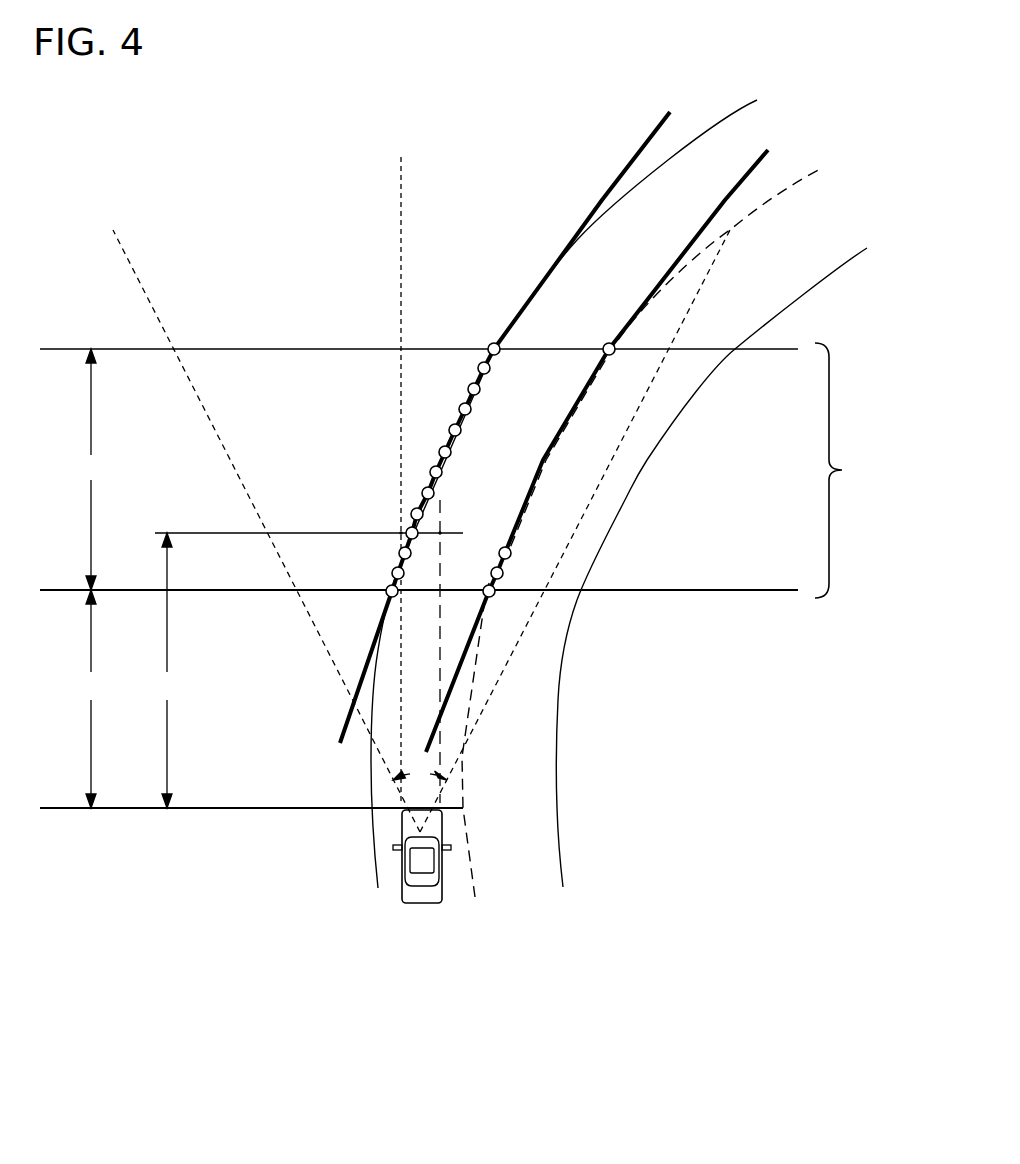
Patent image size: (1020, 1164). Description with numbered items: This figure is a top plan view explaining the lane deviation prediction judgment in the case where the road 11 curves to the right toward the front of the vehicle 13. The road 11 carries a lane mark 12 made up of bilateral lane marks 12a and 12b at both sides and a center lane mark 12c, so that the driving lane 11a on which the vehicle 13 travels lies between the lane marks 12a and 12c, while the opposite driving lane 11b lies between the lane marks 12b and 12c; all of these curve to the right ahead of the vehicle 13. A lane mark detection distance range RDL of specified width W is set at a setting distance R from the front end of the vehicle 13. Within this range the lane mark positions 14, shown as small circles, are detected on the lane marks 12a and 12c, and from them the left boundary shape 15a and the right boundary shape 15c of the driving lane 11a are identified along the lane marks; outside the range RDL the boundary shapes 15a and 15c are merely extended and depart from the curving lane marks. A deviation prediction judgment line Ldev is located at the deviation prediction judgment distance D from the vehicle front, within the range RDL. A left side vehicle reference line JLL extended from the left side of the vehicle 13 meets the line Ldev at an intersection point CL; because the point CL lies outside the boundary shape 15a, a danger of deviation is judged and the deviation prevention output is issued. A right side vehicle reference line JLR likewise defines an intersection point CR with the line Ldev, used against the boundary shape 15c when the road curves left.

The road 11 is at (518, 925).
The driving lane 11a is at (590, 262).
The driving lane 11b is at (787, 277).
The lane mark 12 is at (562, 843).
The bilateral lane mark 12a is at (377, 860).
The bilateral lane mark 12b is at (557, 795).
The center lane mark 12c is at (470, 868).
The vehicle 13 is at (420, 907).
The lane mark positions 14 is at (492, 343).
The boundary shape 15a is at (632, 158).
The boundary shape 15c is at (700, 232).
The left side vehicle reference line JLL is at (400, 217).
The right side vehicle reference line JLR is at (442, 505).
The intersection point CL is at (400, 532).
The intersection point CR is at (443, 532).
The deviation prediction judgment line Ldev is at (288, 533).
The specified width W is at (91, 469).
The setting distance R is at (91, 699).
The deviation prediction judgment distance D is at (166, 670).
The lane mark detection distance range RDL is at (854, 470).